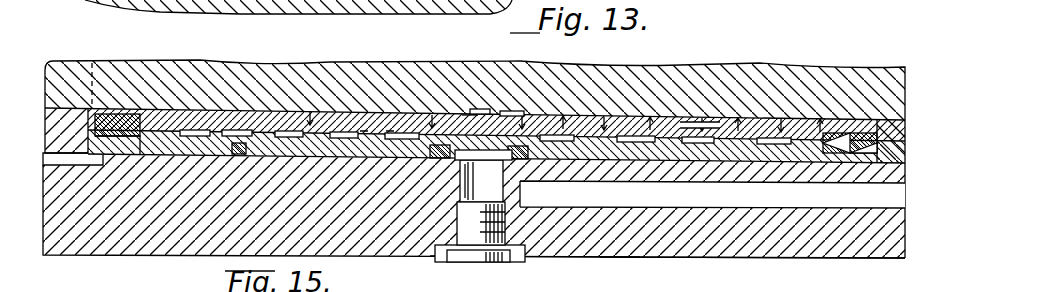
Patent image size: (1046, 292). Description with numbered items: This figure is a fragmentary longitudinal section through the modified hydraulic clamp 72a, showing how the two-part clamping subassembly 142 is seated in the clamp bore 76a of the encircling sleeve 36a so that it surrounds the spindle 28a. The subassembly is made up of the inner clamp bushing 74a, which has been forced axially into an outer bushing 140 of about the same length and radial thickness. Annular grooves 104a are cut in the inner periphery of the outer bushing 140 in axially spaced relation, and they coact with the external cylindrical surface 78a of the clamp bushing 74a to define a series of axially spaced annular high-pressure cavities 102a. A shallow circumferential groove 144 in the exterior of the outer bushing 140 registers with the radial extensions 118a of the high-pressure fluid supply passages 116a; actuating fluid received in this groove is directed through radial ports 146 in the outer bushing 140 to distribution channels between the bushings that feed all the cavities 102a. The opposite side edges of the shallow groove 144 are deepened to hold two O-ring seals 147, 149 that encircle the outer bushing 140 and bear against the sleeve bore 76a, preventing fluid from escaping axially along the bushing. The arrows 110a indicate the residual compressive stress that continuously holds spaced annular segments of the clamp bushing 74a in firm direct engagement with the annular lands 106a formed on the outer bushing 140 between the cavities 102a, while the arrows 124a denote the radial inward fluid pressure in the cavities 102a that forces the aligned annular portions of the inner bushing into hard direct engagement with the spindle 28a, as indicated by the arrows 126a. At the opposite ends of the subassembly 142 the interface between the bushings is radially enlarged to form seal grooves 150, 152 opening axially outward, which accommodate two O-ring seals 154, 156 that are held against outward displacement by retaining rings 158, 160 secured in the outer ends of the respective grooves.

The spindle 28a is at (72, 60).
The encircling sleeve 36a is at (810, 258).
The hydraulic clamp 72a is at (878, 106).
The clamp bushing 74a is at (472, 116).
The clamp bore 76a is at (240, 153).
The external cylindrical surface 78a is at (366, 152).
The high-pressure cavities 102a is at (700, 160).
The grooves 104a is at (640, 158).
The annular lands 106a is at (227, 140).
The arrows 110a is at (292, 132).
The high-pressure fluid supply passages 116a is at (670, 288).
The radial extensions 118a is at (453, 200).
The arrows 124a is at (166, 157).
The arrows 126a is at (255, 120).
The outer bushing 140 is at (702, 158).
The clamping subassembly 142 is at (40, 238).
The shallow circumferential groove 144 is at (500, 178).
The radial ports 146 is at (507, 113).
The O-ring seal 147 is at (474, 108).
The O-ring seal 149 is at (503, 166).
The seal groove 150 is at (107, 118).
The seal groove 152 is at (840, 208).
The O-ring seal 154 is at (133, 135).
The O-ring seal 156 is at (837, 140).
The retaining ring 158 is at (69, 113).
The retaining ring 160 is at (872, 140).